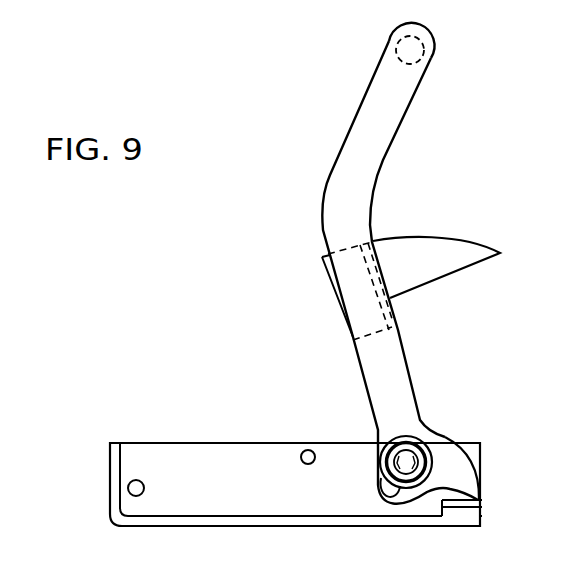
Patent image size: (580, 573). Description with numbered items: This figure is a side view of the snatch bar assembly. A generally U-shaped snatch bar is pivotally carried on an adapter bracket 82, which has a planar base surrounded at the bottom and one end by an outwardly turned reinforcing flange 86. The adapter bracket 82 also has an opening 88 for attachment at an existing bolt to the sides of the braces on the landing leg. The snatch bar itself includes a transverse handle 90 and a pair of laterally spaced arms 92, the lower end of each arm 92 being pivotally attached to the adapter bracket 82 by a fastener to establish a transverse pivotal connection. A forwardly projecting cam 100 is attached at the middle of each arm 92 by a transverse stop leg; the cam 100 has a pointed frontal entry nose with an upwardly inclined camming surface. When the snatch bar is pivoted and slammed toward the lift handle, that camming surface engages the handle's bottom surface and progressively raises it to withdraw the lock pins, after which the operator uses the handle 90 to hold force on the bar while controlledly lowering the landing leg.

The adapter bracket 82 is at (470, 448).
The reinforcing flange 86 is at (467, 513).
The opening 88 is at (304, 453).
The transverse handle 90 is at (404, 52).
The arm 92 is at (337, 220).
The cam 100 is at (423, 262).